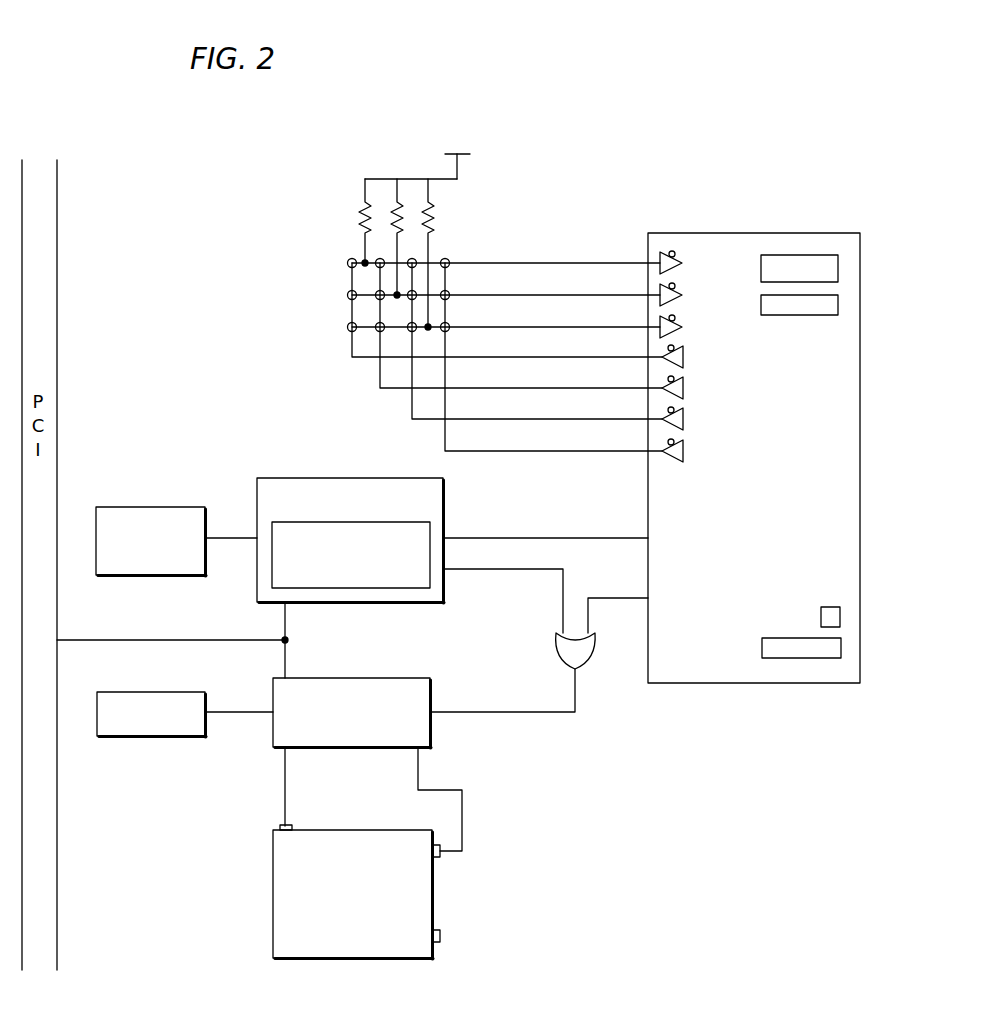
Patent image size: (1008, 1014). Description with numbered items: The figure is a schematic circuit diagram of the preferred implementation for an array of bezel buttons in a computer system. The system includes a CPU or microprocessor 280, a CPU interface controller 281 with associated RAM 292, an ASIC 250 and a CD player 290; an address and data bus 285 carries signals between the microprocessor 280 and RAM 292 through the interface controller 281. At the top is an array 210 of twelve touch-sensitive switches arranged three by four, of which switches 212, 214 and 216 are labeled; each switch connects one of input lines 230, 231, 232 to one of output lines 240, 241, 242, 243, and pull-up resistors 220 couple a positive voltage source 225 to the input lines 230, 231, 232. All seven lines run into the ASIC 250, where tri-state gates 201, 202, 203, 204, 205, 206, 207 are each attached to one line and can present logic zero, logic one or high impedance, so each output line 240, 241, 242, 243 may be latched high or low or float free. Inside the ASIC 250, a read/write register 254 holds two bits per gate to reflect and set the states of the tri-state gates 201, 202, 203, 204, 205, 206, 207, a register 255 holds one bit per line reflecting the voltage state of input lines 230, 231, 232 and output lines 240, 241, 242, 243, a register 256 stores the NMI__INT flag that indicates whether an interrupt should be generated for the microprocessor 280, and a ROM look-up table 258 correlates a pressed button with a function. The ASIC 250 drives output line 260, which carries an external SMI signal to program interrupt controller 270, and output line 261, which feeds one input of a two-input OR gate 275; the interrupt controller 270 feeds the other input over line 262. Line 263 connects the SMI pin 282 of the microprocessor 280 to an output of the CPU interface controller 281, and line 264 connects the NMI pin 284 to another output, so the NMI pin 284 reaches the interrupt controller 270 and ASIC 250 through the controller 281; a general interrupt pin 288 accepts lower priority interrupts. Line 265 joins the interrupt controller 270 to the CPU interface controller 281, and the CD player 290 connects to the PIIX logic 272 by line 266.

The tri-state gate 201 is at (688, 262).
The tri-state gate 202 is at (688, 294).
The tri-state gate 203 is at (688, 326).
The tri-state gate 204 is at (688, 356).
The tri-state gate 205 is at (688, 387).
The tri-state gate 206 is at (688, 418).
The tri-state gate 207 is at (688, 450).
The array of touch-sensitive switches 210 is at (331, 232).
The switch 212 is at (347, 265).
The switch 214 is at (347, 296).
The switch 216 is at (347, 328).
The pull-up resistors 220 is at (446, 215).
The positive voltage source 225 is at (478, 143).
The input line 230 is at (590, 262).
The input line 231 is at (590, 293).
The input line 232 is at (590, 325).
The output line 240 is at (590, 356).
The output line 241 is at (590, 387).
The output line 242 is at (590, 418).
The output line 243 is at (590, 450).
The ASIC 250 is at (754, 458).
The register 254 is at (798, 255).
The register 255 is at (803, 316).
The register 256 is at (828, 606).
The look-up table 258 is at (761, 648).
The output line 260 is at (545, 536).
The output line 261 is at (612, 601).
The line 262 is at (500, 572).
The line 263 is at (288, 788).
The line 264 is at (533, 716).
The line 265 is at (288, 630).
The line 266 is at (236, 535).
The interrupt controller 270 is at (310, 521).
The PIIX logic 272 is at (350, 540).
The OR gate 275 is at (556, 651).
The microprocessor 280 is at (353, 894).
The CPU interface controller 281 is at (405, 676).
The system management interrupt pin 282 is at (282, 825).
The non-maskable interrupt pin 284 is at (438, 858).
The address and data bus 285 is at (243, 710).
The general interrupt pin 288 is at (438, 944).
The CD player 290 is at (140, 506).
The RAM 292 is at (145, 738).